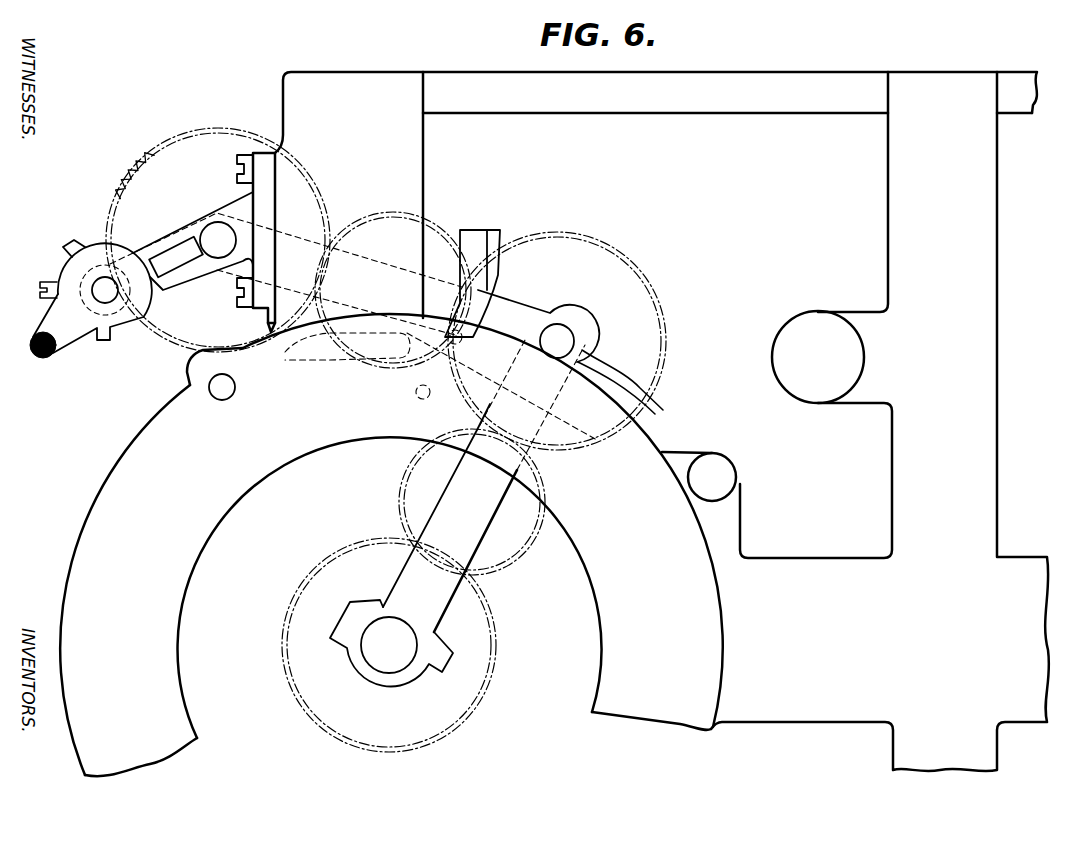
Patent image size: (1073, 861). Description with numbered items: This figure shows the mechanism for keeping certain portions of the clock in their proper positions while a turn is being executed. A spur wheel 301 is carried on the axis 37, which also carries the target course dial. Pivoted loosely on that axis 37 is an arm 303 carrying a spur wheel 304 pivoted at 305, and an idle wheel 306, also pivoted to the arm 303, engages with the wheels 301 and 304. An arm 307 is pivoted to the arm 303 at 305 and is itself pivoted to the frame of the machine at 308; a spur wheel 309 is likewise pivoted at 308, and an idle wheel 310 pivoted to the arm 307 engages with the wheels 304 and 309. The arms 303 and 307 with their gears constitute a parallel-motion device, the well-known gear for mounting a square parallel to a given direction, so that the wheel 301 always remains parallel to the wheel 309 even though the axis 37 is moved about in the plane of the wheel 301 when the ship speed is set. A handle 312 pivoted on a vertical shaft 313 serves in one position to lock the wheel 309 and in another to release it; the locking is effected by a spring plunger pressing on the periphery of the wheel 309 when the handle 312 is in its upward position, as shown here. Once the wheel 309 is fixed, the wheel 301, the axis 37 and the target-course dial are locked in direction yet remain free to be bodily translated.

The axis 37 is at (391, 643).
The spur wheel 301 is at (389, 645).
The arm 303 is at (450, 518).
The spur wheel 304 is at (627, 294).
The pivot 305 is at (570, 350).
The idle wheel 306 is at (503, 541).
The arm 307 is at (434, 280).
The frame pivot 308 is at (215, 223).
The spur wheel 309 is at (292, 187).
The idle wheel 310 is at (436, 210).
The handle 312 is at (72, 346).
The vertical shaft 313 is at (103, 282).